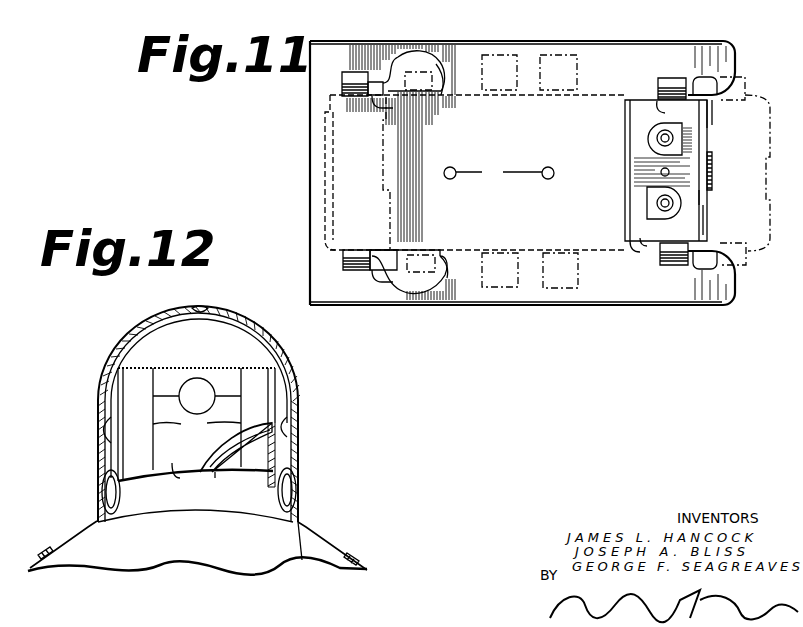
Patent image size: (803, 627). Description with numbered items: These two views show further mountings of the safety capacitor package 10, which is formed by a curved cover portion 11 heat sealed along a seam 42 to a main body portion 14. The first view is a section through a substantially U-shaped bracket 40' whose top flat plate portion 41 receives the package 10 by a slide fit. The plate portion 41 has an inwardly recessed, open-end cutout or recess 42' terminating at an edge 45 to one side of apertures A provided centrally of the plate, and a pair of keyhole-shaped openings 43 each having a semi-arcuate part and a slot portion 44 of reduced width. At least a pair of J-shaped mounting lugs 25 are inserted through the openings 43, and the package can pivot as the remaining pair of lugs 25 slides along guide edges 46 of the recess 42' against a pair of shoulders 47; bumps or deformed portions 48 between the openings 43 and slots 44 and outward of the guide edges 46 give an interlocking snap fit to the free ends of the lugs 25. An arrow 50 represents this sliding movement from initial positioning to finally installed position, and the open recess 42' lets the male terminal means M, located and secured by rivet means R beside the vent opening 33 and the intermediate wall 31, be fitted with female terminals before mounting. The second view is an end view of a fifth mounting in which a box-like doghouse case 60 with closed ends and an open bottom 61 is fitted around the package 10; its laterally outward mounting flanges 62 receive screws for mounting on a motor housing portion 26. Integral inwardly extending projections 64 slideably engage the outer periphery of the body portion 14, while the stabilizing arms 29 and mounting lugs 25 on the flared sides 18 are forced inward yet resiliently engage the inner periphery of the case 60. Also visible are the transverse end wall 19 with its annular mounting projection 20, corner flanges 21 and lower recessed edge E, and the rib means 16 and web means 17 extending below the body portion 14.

In FIG. 11, the safety capacitor package 10 is at (708, 139).
In FIG. 12, the safety capacitor package 10 is at (245, 342).
In FIG. 12, the cover portion 11 is at (249, 342).
In FIG. 11, the main body portion 14 is at (712, 116).
In FIG. 12, the main body portion 14 is at (276, 378).
In FIG. 12, the rib means 16 is at (226, 477).
In FIG. 12, the web means 17 is at (248, 474).
In FIG. 11, the sides 18 is at (445, 78).
In FIG. 12, the sides 18 is at (289, 458).
In FIG. 11, the transverse walls 19 is at (710, 200).
In FIG. 12, the transverse walls 19 is at (262, 395).
In FIG. 11, the annular mounting projections 20 is at (713, 174).
In FIG. 12, the annular mounting projections 20 is at (197, 419).
In FIG. 11, the flanges 21 is at (707, 220).
In FIG. 12, the flanges 21 is at (197, 426).
In FIG. 11, the mounting lugs 25 is at (342, 85).
In FIG. 12, the mounting lugs 25 is at (120, 503).
In FIG. 12, the motor housing portion 26 is at (175, 558).
In FIG. 11, the stabilizing arms 29 is at (500, 55).
In FIG. 12, the stabilizing arms 29 is at (103, 470).
In FIG. 11, the intermediate wall 31 is at (628, 172).
In FIG. 12, the intermediate wall 31 is at (220, 447).
In FIG. 11, the vent opening 33 is at (668, 175).
In FIG. 11, the U-shaped bracket 40' is at (296, 172).
In FIG. 11, the top flat plate portion 41 is at (333, 155).
In FIG. 12, the seam 42 is at (196, 350).
In FIG. 11, the recess 42' is at (635, 270).
In FIG. 11, the keyhole-shaped openings 43 is at (408, 57).
In FIG. 11, the slot portion 44 is at (375, 96).
In FIG. 11, the edge 45 is at (625, 155).
In FIG. 11, the guide edges 46 is at (713, 96).
In FIG. 11, the shoulders 47 is at (657, 102).
In FIG. 11, the bumps 48 is at (378, 68).
In FIG. 11, the arrow 50 is at (772, 137).
In FIG. 12, the box-like case 60 is at (118, 358).
In FIG. 12, the open bottom 61 is at (288, 522).
In FIG. 12, the mounting flanges 62 is at (45, 550).
In FIG. 12, the inwardly extending projections 64 is at (100, 427).
In FIG. 11, the apertures A is at (499, 172).
In FIG. 12, the lower recessed edge E is at (169, 465).
In FIG. 11, the male terminal means M is at (652, 130).
In FIG. 11, the rivet means R is at (658, 140).